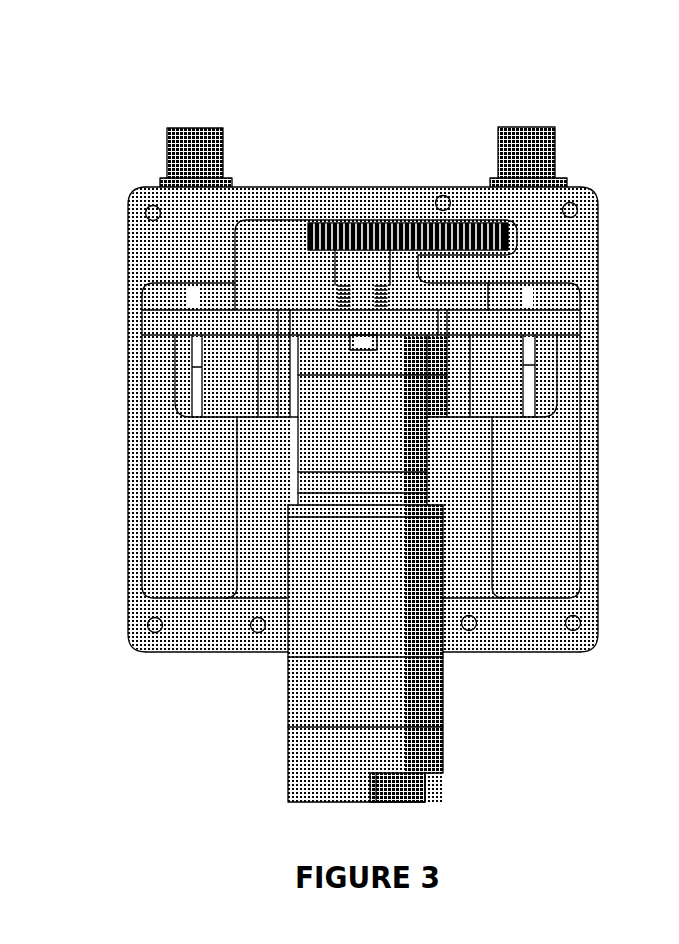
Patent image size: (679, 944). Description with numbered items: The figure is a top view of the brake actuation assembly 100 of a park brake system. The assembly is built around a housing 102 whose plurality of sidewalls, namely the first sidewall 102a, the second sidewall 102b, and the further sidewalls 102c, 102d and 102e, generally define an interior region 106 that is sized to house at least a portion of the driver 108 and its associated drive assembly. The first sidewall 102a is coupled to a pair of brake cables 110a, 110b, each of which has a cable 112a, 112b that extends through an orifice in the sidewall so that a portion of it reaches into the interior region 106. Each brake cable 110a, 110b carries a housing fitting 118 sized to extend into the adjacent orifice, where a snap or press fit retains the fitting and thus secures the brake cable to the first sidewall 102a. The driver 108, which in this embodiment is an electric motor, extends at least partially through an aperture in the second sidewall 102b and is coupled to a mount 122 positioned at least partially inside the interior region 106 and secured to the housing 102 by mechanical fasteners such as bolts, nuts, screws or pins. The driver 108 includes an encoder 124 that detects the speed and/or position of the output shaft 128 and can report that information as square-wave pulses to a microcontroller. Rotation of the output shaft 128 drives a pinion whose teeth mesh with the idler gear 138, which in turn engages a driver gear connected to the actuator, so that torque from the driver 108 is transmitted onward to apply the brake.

The brake actuation assembly 100 is at (399, 108).
The housing 102 is at (525, 635).
The first sidewall 102a is at (412, 183).
The second sidewall 102b is at (480, 652).
The sidewall 102c is at (600, 525).
The sidewall 102d is at (128, 570).
The sidewall 102e is at (280, 260).
The interior region 106 is at (177, 297).
The driver 108 is at (333, 572).
The brake cable 110a is at (168, 155).
The brake cable 110b is at (522, 155).
The cable 112a is at (200, 392).
The cable 112b is at (533, 390).
The housing fitting 118 is at (157, 183).
The mount 122 is at (168, 323).
The encoder 124 is at (310, 778).
The output shaft 128 is at (337, 293).
The idler gear 138 is at (478, 217).